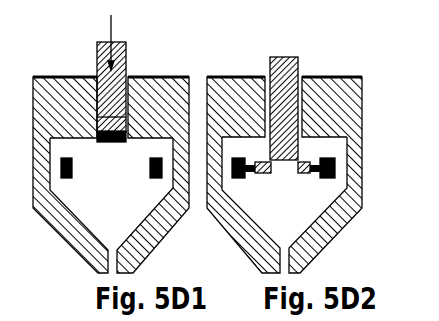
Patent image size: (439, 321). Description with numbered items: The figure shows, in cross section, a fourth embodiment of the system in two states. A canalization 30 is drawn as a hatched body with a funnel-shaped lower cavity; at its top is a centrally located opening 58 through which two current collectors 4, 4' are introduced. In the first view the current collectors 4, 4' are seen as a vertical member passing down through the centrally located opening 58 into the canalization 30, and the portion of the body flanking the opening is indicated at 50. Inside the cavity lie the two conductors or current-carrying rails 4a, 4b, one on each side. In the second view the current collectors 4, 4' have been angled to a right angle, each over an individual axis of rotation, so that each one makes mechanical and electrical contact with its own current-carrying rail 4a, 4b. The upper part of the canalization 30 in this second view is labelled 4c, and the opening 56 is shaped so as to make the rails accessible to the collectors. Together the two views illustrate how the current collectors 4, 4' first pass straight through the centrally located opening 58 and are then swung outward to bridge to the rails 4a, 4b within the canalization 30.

In FIG. 5D1, the current collector 4 is at (103, 94).
In FIG. 5D2, the current collector 4 is at (273, 114).
In FIG. 5D1, the current collector 4' is at (128, 153).
In FIG. 5D2, the current collector 4' is at (308, 185).
In FIG. 5D1, the current-carrying rail 4a is at (65, 180).
In FIG. 5D2, the current-carrying rail 4a is at (241, 158).
In FIG. 5D1, the current-carrying rail 4b is at (155, 180).
In FIG. 5D2, the current-carrying rail 4b is at (324, 158).
In FIG. 5D2, the tube wall 4c is at (235, 77).
In FIG. 5D1, the canalization 30 is at (62, 233).
In FIG. 5D2, the canalization 30 is at (237, 228).
In FIG. 5D1, the housing 50 is at (97, 77).
In FIG. 5D2, the opening 56 is at (310, 76).
In FIG. 5D1, the centrally located opening 58 is at (128, 77).